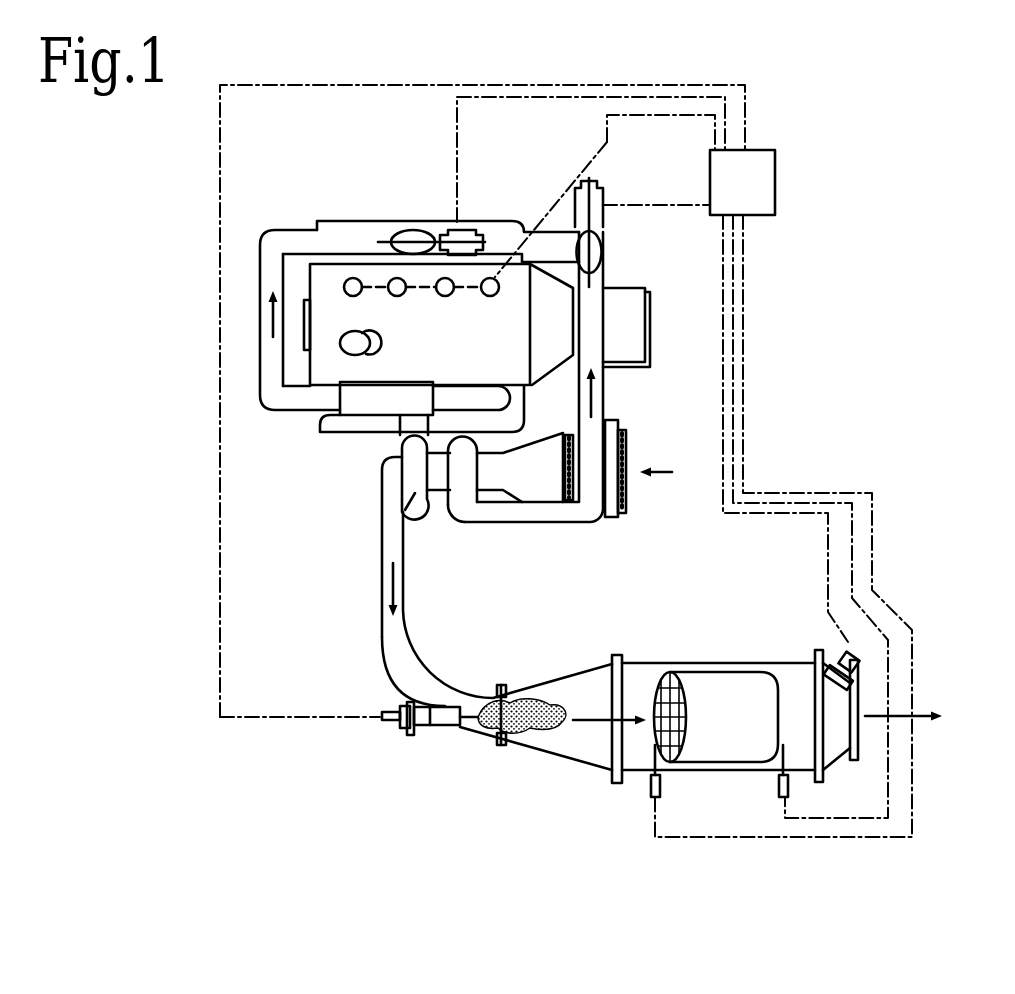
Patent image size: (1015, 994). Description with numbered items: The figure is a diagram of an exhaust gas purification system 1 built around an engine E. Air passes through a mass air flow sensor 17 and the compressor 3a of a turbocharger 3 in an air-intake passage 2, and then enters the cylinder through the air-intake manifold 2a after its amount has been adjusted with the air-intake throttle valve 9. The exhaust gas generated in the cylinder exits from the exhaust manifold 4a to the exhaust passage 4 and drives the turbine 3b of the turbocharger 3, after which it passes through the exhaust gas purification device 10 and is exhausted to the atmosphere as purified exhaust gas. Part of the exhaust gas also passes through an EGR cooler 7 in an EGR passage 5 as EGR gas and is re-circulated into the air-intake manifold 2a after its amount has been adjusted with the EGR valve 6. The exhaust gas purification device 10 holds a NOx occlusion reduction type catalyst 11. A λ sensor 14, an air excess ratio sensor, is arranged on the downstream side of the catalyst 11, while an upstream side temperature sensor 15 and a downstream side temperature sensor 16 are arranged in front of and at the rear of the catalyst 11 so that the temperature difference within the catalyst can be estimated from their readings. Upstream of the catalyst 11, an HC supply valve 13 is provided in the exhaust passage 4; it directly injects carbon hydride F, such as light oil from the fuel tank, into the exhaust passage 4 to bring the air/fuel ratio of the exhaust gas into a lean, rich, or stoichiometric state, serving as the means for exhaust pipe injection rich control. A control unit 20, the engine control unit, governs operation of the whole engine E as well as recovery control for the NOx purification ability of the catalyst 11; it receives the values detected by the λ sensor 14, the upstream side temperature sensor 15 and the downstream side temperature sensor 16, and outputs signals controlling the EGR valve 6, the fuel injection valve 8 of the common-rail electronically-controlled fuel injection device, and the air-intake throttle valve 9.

The exhaust gas purification system 1 is at (822, 350).
The air-intake passage 2 is at (574, 523).
The air-intake manifold 2a is at (368, 226).
The turbocharger 3 is at (435, 493).
The compressor 3a is at (465, 493).
The turbine 3b is at (404, 511).
The exhaust passage 4 is at (382, 640).
The exhaust manifold 4a is at (372, 427).
The EGR passage 5 is at (262, 374).
The EGR valve 6 is at (413, 240).
The EGR cooler 7 is at (360, 403).
The fuel injection valve 8 is at (493, 279).
The air-intake throttle valve 9 is at (592, 252).
The exhaust gas purification device 10 is at (703, 772).
The NOx occlusion reduction type catalyst 11 is at (720, 712).
The HC supply valve 13 is at (442, 726).
The λ sensor 14 is at (845, 655).
The upstream side temperature sensor 15 is at (655, 798).
The downstream side temperature sensor 16 is at (783, 798).
The mass air flow sensor 17 is at (542, 481).
The control unit 20 is at (767, 174).
The engine E is at (377, 317).
The carbon hydride F is at (533, 738).